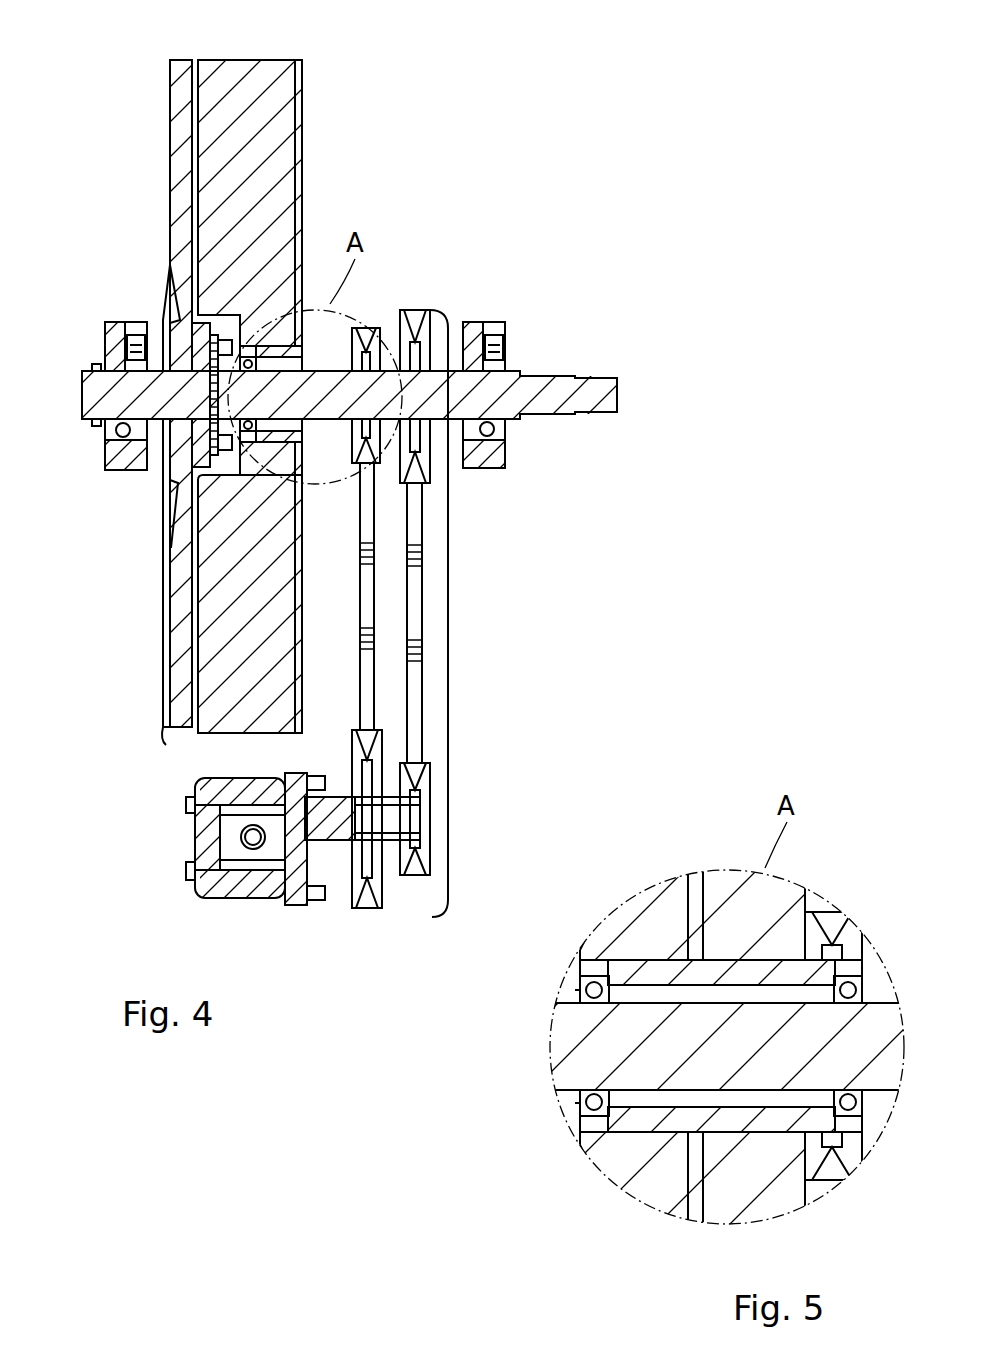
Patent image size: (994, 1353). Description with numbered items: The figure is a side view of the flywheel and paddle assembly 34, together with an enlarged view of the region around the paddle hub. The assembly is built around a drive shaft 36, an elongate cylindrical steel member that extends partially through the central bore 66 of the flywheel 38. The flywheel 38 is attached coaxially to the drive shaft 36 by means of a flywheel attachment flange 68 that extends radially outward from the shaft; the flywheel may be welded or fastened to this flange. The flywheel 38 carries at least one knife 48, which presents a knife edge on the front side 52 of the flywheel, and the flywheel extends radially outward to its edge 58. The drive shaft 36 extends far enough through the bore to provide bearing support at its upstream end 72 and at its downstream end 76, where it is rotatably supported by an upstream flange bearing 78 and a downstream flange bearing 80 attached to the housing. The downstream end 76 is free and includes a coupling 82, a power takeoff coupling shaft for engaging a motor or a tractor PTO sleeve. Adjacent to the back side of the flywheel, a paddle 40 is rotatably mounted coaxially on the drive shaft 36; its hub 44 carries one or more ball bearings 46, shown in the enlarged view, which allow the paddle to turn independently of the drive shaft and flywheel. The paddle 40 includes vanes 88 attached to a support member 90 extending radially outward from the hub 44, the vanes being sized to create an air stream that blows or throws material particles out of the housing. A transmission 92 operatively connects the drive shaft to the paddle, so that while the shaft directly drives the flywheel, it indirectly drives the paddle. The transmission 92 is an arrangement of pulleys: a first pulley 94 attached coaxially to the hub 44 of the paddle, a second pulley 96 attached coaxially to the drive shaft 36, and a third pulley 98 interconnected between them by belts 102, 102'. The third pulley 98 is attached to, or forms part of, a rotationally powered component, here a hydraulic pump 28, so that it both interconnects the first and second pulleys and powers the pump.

In FIG. 4, the hydraulic pump 28 is at (200, 836).
In FIG. 4, the flywheel and paddle assembly 34 is at (548, 226).
In FIG. 4, the drive shaft 36 is at (545, 416).
In FIG. 5, the drive shaft 36 is at (560, 1046).
In FIG. 4, the flywheel 38 is at (178, 62).
In FIG. 4, the paddle 40 is at (303, 78).
In FIG. 5, the hub 44 is at (723, 970).
In FIG. 5, the ball bearings 46 is at (862, 988).
In FIG. 4, the knife 48 is at (165, 612).
In FIG. 4, the front side 52 is at (178, 104).
In FIG. 4, the edge 58 is at (170, 745).
In FIG. 4, the central bore 66 is at (172, 447).
In FIG. 4, the flywheel attachment flange 68 is at (200, 345).
In FIG. 4, the upstream end 72 is at (86, 401).
In FIG. 4, the downstream end 76 is at (618, 396).
In FIG. 4, the upstream flange bearing 78 is at (112, 325).
In FIG. 4, the downstream flange bearing 80 is at (492, 466).
In FIG. 4, the coupling 82 is at (580, 377).
In FIG. 4, the vanes 88 is at (262, 177).
In FIG. 5, the vanes 88 is at (648, 895).
In FIG. 4, the support member 90 is at (303, 122).
In FIG. 5, the support member 90 is at (695, 888).
In FIG. 4, the transmission 92 is at (449, 598).
In FIG. 4, the first pulley 94 is at (372, 330).
In FIG. 5, the first pulley 94 is at (838, 952).
In FIG. 4, the second pulley 96 is at (418, 312).
In FIG. 4, the third pulley 98 is at (430, 828).
In FIG. 4, the belt 102 is at (488, 623).
In FIG. 4, the belt 102' is at (341, 596).